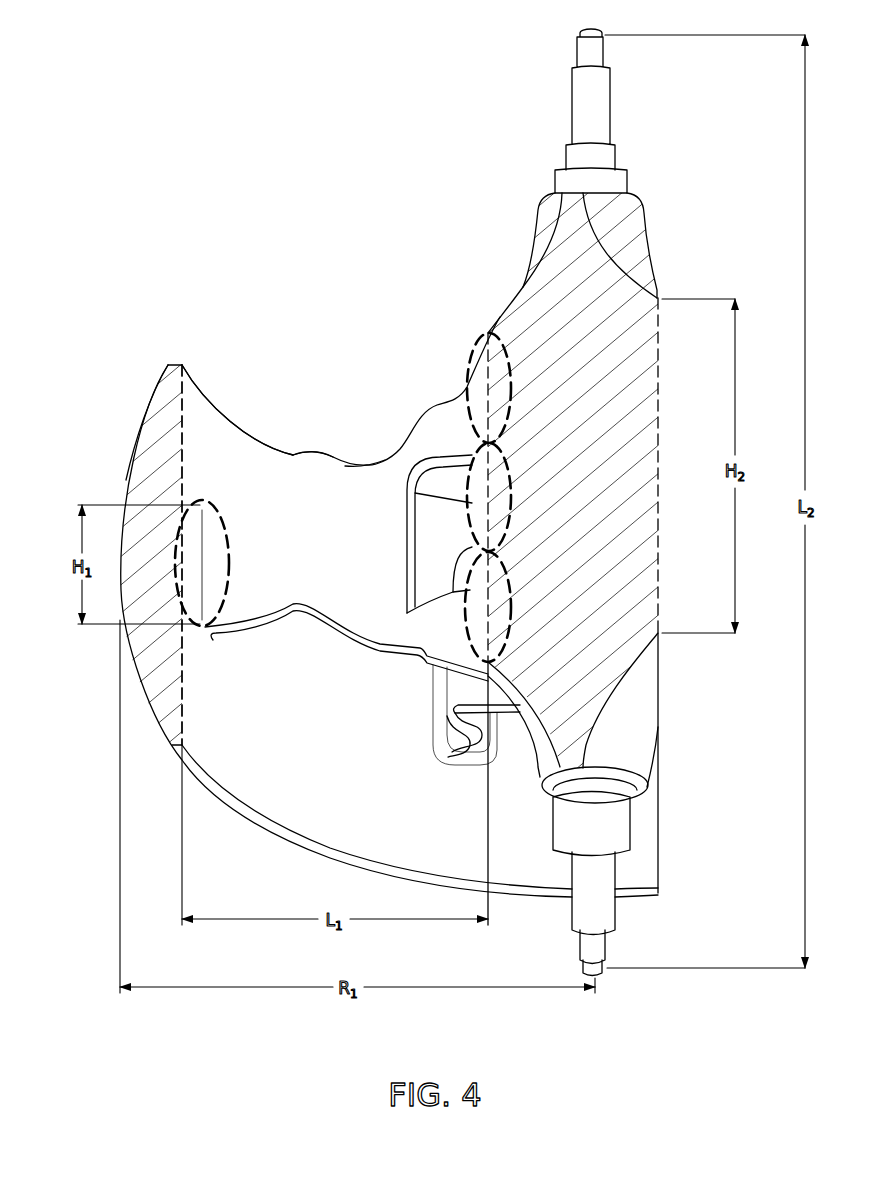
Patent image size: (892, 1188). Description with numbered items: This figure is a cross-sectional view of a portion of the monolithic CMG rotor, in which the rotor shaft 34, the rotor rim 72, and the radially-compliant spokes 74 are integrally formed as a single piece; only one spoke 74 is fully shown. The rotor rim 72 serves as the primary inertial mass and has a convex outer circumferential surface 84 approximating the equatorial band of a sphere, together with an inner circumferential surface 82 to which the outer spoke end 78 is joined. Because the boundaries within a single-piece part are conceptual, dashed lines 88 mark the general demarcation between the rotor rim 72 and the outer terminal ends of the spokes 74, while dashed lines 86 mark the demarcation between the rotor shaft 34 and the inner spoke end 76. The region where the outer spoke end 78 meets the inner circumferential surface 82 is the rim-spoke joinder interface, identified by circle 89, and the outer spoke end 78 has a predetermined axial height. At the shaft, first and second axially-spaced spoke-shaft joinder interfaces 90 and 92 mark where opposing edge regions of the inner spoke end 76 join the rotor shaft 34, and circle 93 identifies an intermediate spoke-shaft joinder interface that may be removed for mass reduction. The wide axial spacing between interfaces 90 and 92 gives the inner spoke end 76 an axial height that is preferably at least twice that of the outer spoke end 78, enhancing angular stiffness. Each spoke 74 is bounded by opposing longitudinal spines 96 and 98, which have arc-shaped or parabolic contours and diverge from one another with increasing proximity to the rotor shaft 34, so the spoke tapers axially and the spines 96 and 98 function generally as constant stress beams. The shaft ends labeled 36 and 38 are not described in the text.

The rotor shaft 34 is at (627, 267).
The upper shaft 36 is at (604, 103).
The lower shaft 38 is at (602, 948).
The rotor rim 72 is at (125, 445).
The radially-compliant spoke 74 is at (367, 458).
The inner spoke end 76 is at (438, 413).
The outer spoke end 78 is at (246, 587).
The inner circumferential surface 82 is at (208, 412).
The outer circumferential surface 84 is at (152, 400).
The dashed lines 86 is at (497, 494).
The dashed lines 88 is at (183, 697).
The rim-spoke joinder interface 89 is at (228, 543).
The first spoke-shaft joinder interface 90 is at (467, 350).
The second spoke-shaft joinder interface 92 is at (463, 617).
The intermediate spoke-shaft joinder interface 93 is at (468, 507).
The longitudinal spine 96 is at (320, 450).
The longitudinal spine 98 is at (372, 652).